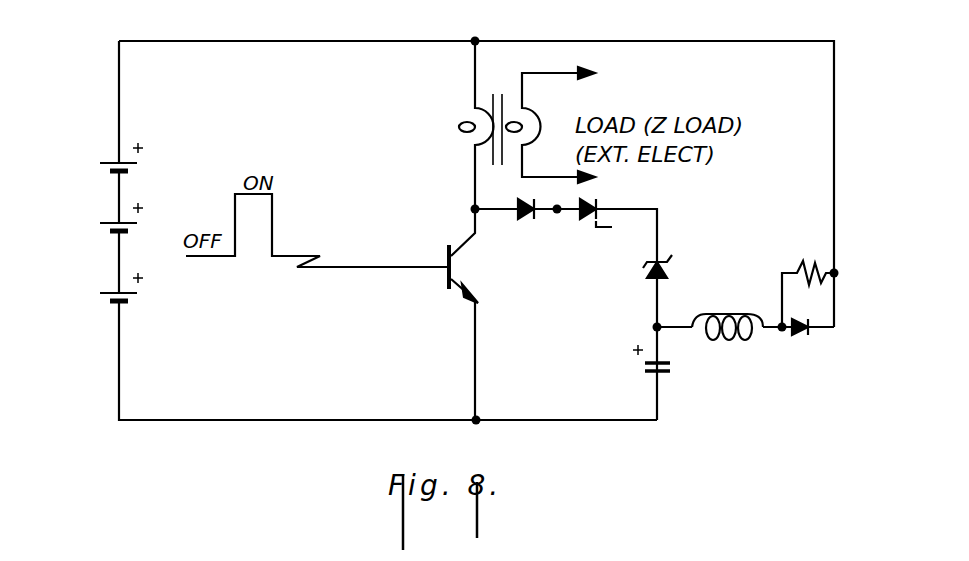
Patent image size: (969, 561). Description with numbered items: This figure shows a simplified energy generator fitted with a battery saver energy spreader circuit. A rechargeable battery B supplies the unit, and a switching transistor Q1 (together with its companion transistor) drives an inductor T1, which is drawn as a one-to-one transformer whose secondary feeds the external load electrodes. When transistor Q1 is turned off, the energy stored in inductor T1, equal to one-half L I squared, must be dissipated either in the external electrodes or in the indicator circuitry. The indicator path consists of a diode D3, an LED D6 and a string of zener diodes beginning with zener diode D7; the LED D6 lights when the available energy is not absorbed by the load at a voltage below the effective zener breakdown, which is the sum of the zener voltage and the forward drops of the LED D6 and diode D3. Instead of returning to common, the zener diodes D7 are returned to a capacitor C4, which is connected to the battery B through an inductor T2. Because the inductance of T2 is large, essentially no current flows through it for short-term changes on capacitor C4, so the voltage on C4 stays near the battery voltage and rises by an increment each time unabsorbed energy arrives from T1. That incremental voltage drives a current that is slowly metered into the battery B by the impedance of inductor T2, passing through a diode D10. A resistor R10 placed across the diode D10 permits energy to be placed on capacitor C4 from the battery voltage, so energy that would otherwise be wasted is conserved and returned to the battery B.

The battery B is at (80, 222).
The transistor Q1 is at (419, 314).
The inductor T1 is at (512, 125).
The diode D3 is at (519, 217).
The LED D6 is at (601, 217).
The zener diode D7 is at (609, 293).
The capacitor C4 is at (667, 372).
The inductor T2 is at (727, 313).
The resistor R10 is at (808, 285).
The diode D10 is at (806, 344).